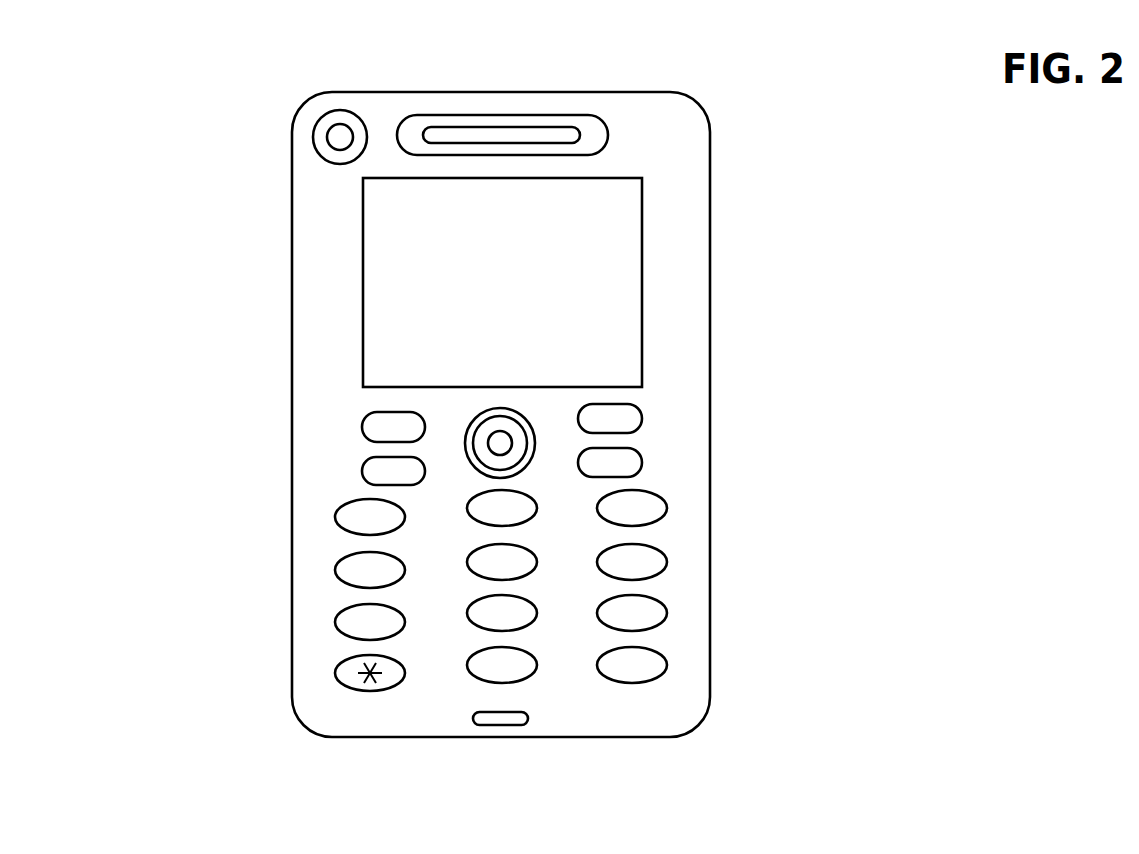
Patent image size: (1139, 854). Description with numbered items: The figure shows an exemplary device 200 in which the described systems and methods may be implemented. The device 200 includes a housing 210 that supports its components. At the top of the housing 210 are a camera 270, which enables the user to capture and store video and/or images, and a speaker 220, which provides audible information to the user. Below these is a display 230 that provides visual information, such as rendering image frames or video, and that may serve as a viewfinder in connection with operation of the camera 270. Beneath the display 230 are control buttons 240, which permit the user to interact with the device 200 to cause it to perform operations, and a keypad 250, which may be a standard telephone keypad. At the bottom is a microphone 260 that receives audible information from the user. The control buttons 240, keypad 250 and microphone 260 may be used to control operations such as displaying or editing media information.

The device 200 is at (140, 49).
The housing 210 is at (292, 412).
The speaker 220 is at (502, 120).
The display 230 is at (642, 283).
The control buttons 240 is at (658, 397).
The keypad 250 is at (678, 683).
The microphone 260 is at (503, 727).
The camera 270 is at (313, 128).